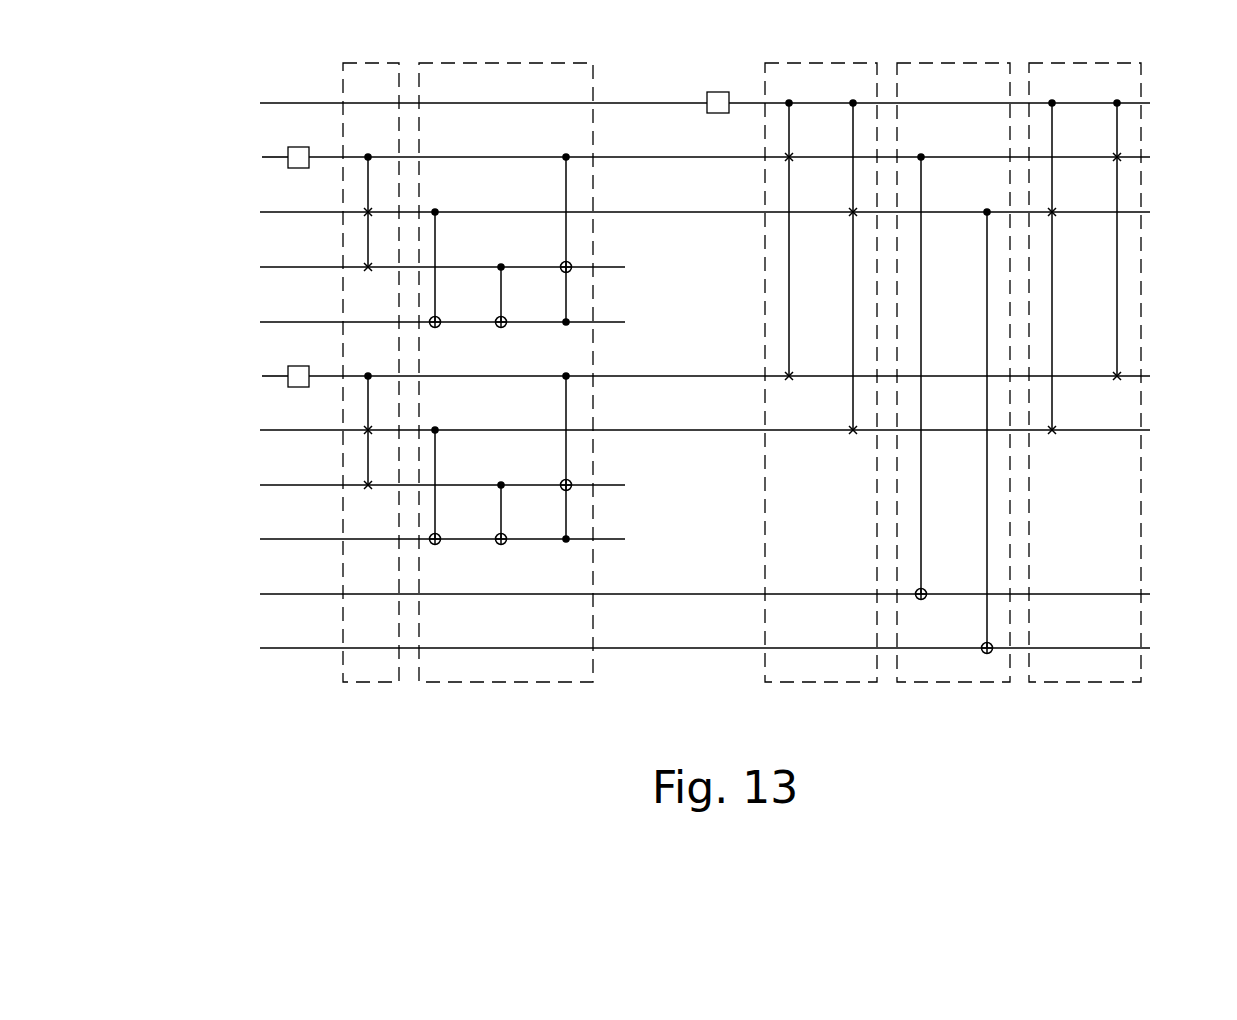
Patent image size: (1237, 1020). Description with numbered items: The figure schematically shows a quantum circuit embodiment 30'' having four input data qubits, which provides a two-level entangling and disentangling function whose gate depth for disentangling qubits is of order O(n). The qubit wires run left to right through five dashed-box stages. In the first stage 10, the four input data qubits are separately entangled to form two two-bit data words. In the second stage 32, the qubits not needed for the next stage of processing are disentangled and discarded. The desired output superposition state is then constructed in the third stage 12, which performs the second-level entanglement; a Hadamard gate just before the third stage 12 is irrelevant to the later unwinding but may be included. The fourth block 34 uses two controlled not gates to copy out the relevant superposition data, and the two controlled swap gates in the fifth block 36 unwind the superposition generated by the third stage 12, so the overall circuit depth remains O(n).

The circuit embodiment 30'' is at (684, 422).
The first stage 10 is at (368, 686).
The second stage 32 is at (556, 686).
The third stage 12 is at (787, 687).
The fourth block 34 is at (976, 686).
The fifth block 36 is at (1106, 686).